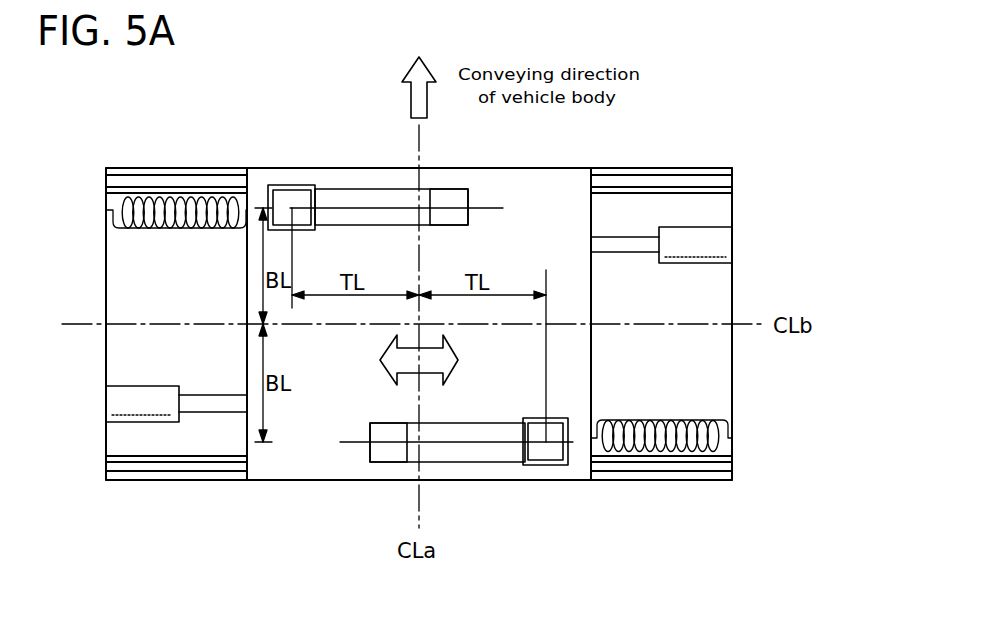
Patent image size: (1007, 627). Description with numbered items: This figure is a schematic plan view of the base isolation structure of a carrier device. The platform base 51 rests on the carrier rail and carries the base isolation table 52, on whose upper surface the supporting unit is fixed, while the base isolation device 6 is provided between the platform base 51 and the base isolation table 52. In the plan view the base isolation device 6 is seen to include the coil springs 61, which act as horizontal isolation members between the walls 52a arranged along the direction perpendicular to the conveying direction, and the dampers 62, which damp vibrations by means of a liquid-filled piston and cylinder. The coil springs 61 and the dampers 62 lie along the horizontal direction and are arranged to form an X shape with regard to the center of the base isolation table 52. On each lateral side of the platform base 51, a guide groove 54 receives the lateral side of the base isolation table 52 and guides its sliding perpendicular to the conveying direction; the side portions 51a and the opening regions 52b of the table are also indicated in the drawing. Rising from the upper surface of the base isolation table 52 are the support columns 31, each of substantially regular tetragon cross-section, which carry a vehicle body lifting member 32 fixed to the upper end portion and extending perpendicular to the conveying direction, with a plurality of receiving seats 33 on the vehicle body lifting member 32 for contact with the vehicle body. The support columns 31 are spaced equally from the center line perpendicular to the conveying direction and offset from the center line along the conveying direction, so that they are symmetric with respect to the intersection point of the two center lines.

The base isolation device 6 is at (751, 238).
The support column 31 is at (300, 186).
The vehicle body lifting member 32 is at (338, 189).
The receiving seat 33 is at (288, 193).
The platform base 51 is at (136, 483).
The side wall 51a is at (112, 296).
The base isolation table 52 is at (533, 168).
The wall surface 52a is at (593, 218).
The opening 52b is at (380, 168).
The guide groove 54 is at (676, 181).
The coil spring 61 is at (703, 424).
The damper 62 is at (686, 264).